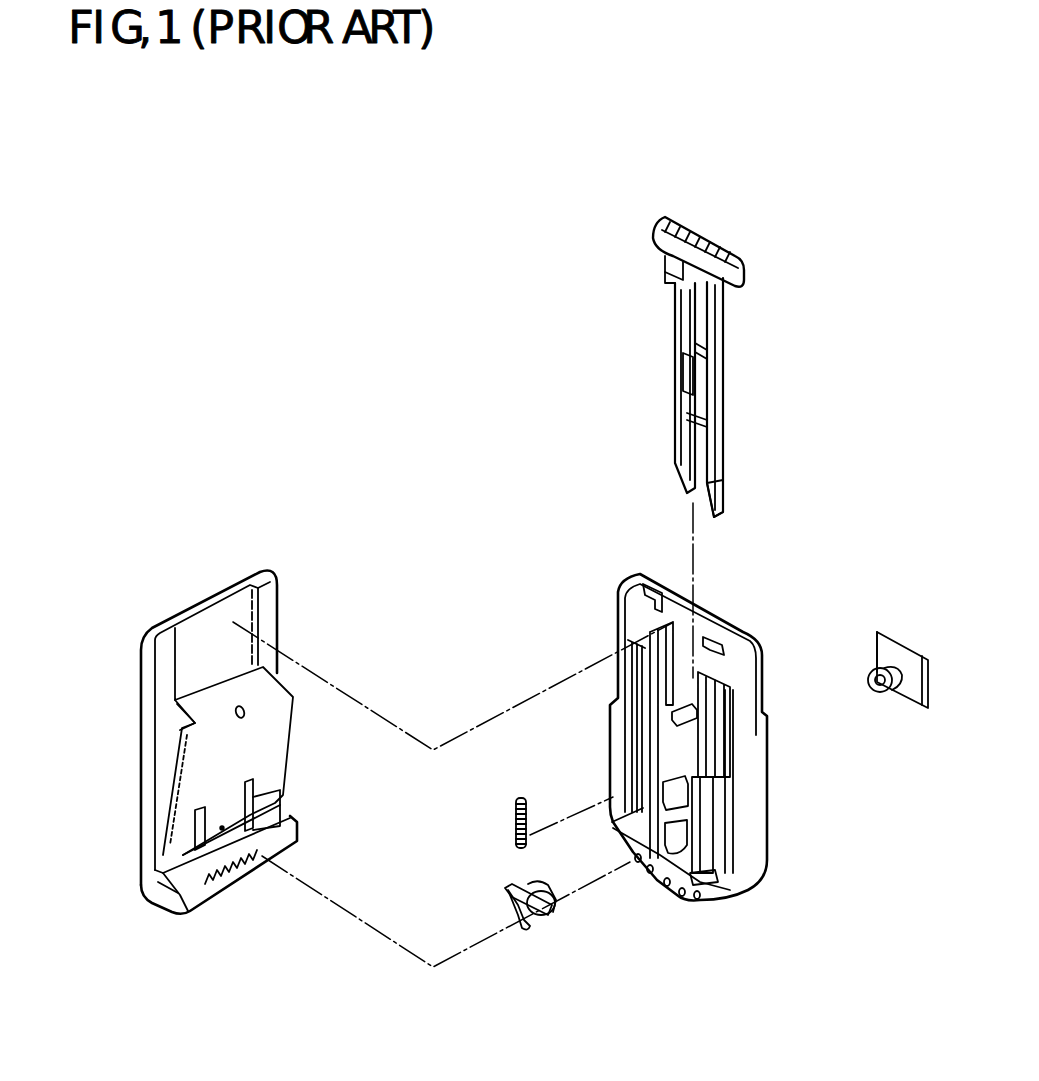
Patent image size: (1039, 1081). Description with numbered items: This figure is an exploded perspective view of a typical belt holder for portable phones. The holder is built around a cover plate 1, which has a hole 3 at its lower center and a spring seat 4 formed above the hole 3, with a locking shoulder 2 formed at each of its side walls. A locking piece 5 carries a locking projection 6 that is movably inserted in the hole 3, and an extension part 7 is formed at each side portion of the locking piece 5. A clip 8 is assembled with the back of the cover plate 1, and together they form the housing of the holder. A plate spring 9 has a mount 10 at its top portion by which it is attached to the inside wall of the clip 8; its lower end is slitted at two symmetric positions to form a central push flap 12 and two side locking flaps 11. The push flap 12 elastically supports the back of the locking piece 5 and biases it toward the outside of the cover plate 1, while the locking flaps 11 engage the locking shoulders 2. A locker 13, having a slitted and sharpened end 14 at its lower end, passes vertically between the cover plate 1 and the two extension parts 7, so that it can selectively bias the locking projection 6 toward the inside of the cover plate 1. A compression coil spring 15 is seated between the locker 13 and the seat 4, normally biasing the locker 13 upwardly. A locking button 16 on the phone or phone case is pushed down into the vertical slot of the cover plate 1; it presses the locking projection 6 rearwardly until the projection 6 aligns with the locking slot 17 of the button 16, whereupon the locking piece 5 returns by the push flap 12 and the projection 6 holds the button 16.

The cover plate 1 is at (768, 655).
The locking shoulder 2 is at (730, 770).
The hole 3 is at (680, 893).
The spring seat 4 is at (690, 828).
The locking piece 5 is at (550, 928).
The locking projection 6 is at (558, 912).
The extension part 7 is at (535, 935).
The clip 8 is at (141, 648).
The plate spring 9 is at (190, 770).
The mount 10 is at (192, 728).
The locking flap 11 is at (175, 858).
The push flap 12 is at (231, 882).
The locker 13 is at (748, 311).
The slitted and sharpened end 14 is at (727, 495).
The compression coil spring 15 is at (510, 826).
The locking button 16 is at (882, 703).
The locking slot 17 is at (863, 665).